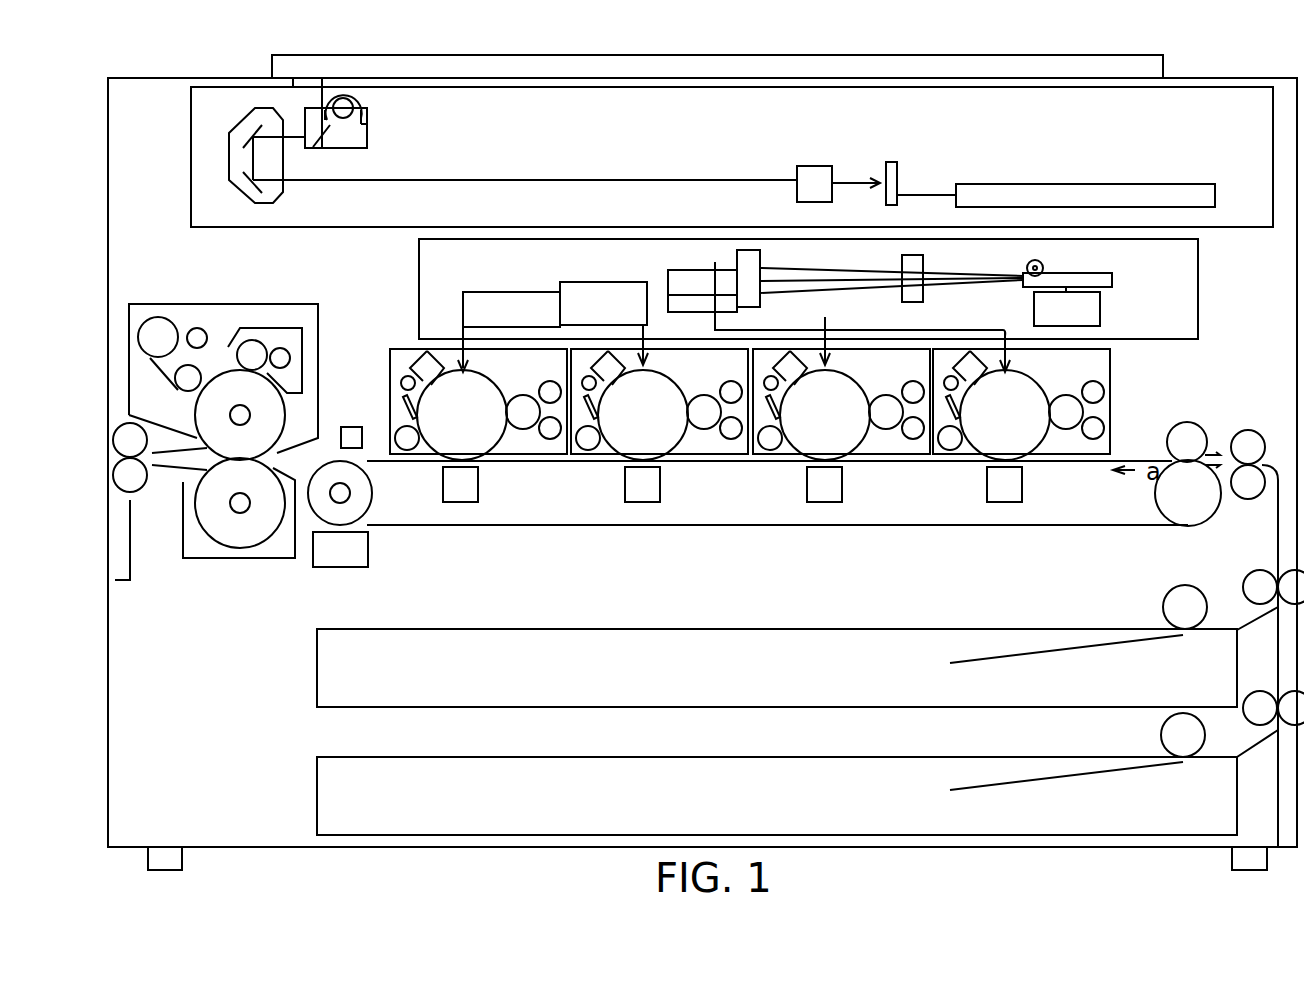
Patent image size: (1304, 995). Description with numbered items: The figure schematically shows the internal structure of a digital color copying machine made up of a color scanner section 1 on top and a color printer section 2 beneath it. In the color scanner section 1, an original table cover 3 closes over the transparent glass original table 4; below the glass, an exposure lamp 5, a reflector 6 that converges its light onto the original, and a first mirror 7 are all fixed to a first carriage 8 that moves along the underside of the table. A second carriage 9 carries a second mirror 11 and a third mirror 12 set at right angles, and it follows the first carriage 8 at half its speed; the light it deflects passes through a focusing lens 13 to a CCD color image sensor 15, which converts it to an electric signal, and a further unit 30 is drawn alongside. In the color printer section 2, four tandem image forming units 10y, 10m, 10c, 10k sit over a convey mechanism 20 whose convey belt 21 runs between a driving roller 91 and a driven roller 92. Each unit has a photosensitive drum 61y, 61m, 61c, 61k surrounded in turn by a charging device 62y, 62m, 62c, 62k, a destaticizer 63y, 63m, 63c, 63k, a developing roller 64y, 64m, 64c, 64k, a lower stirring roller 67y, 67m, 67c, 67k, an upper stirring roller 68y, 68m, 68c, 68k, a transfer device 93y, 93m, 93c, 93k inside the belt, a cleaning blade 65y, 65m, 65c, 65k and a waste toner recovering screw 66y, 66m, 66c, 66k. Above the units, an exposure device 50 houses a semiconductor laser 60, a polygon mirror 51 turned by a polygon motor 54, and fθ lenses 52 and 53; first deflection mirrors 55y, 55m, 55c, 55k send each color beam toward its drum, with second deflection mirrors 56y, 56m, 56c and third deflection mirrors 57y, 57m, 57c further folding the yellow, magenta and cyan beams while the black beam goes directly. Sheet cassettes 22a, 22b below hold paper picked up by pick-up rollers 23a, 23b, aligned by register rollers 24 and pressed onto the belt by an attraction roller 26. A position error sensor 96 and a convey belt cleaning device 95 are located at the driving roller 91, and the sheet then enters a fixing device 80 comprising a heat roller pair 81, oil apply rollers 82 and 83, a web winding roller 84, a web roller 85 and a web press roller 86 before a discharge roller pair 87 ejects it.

The color scanner section 1 is at (596, 98).
The color printer section 2 is at (378, 285).
The original table cover 3 is at (487, 66).
The original table 4 is at (538, 82).
The exposure lamp 5 is at (362, 104).
The reflector 6 is at (367, 134).
The first mirror 7 is at (326, 150).
The first carriage 8 is at (372, 122).
The second carriage 9 is at (280, 200).
The second mirror 11 is at (246, 125).
The third mirror 12 is at (243, 195).
The focusing lens 13 is at (812, 166).
The CCD color image sensor 15 is at (891, 162).
The image processing section 30 is at (1055, 184).
The exposure device 50 is at (1198, 290).
The polygon mirror 51 is at (1112, 280).
The fθ lens 52 is at (923, 264).
The fθ lens 53 is at (760, 255).
The polygon motor 54 is at (1100, 306).
The semiconductor laser 60 is at (1041, 268).
The first deflection mirror 55k is at (463, 292).
The first deflection mirror 55c is at (548, 288).
The first deflection mirror 55m is at (705, 255).
The first deflection mirror 55y is at (745, 268).
The second deflection mirror 56c is at (548, 334).
The second deflection mirror 56m is at (668, 290).
The second deflection mirror 56y is at (725, 398).
The third deflection mirror 57c is at (640, 328).
The third deflection mirror 57m is at (827, 320).
The third deflection mirror 57y is at (1092, 326).
The fourth image forming unit 10k is at (500, 470).
The third image forming unit 10c is at (670, 470).
The second image forming unit 10m is at (850, 470).
The first image forming unit 10y is at (1045, 470).
The photosensitive drum 61k is at (480, 370).
The photosensitive drum 61c is at (648, 372).
The photosensitive drum 61m is at (829, 372).
The photosensitive drum 61y is at (1048, 372).
The charging device 62k is at (412, 356).
The charging device 62c is at (614, 352).
The charging device 62m is at (810, 352).
The charging device 62y is at (978, 352).
The destaticizer 63k is at (400, 382).
The destaticizer 63c is at (589, 376).
The destaticizer 63m is at (771, 376).
The destaticizer 63y is at (950, 376).
The developing roller 64k is at (520, 430).
The developing roller 64c is at (700, 430).
The developing roller 64m is at (884, 430).
The developing roller 64y is at (1066, 430).
The cleaning blade 65k is at (403, 405).
The cleaning blade 65c is at (590, 420).
The cleaning blade 65m is at (772, 430).
The cleaning blade 65y is at (952, 420).
The waste toner recovering screw 66k is at (396, 435).
The waste toner recovering screw 66c is at (589, 450).
The waste toner recovering screw 66m is at (770, 450).
The waste toner recovering screw 66y is at (950, 450).
The lower stirring roller 67k is at (548, 440).
The lower stirring roller 67c is at (730, 440).
The lower stirring roller 67m is at (913, 440).
The lower stirring roller 67y is at (1094, 440).
The upper stirring roller 68k is at (545, 388).
The upper stirring roller 68c is at (738, 404).
The upper stirring roller 68m is at (915, 390).
The upper stirring roller 68y is at (1105, 392).
The transfer device 93k is at (455, 502).
The transfer device 93c is at (640, 502).
The transfer device 93m is at (822, 502).
The transfer device 93y is at (1005, 502).
The convey mechanism 20 is at (1078, 526).
The convey belt 21 is at (1141, 460).
The sheet cassette 22a is at (317, 668).
The sheet cassette 22b is at (317, 796).
The pick-up roller 23a is at (1163, 606).
The pick-up roller 23b is at (1161, 735).
The register rollers 24 is at (1248, 430).
The attraction roller 26 is at (1190, 422).
The fixing device 80 is at (327, 337).
The heat roller pair 81 is at (240, 548).
The oil apply roller 82 is at (280, 348).
The oil apply roller 83 is at (252, 340).
The web winding roller 84 is at (196, 328).
The web roller 85 is at (160, 317).
The web press roller 86 is at (175, 390).
The discharge roller pair 87 is at (133, 493).
The driving roller 91 is at (363, 517).
The driven roller 92 is at (1162, 515).
The convey belt cleaning device 95 is at (345, 568).
The position error sensor 96 is at (362, 452).